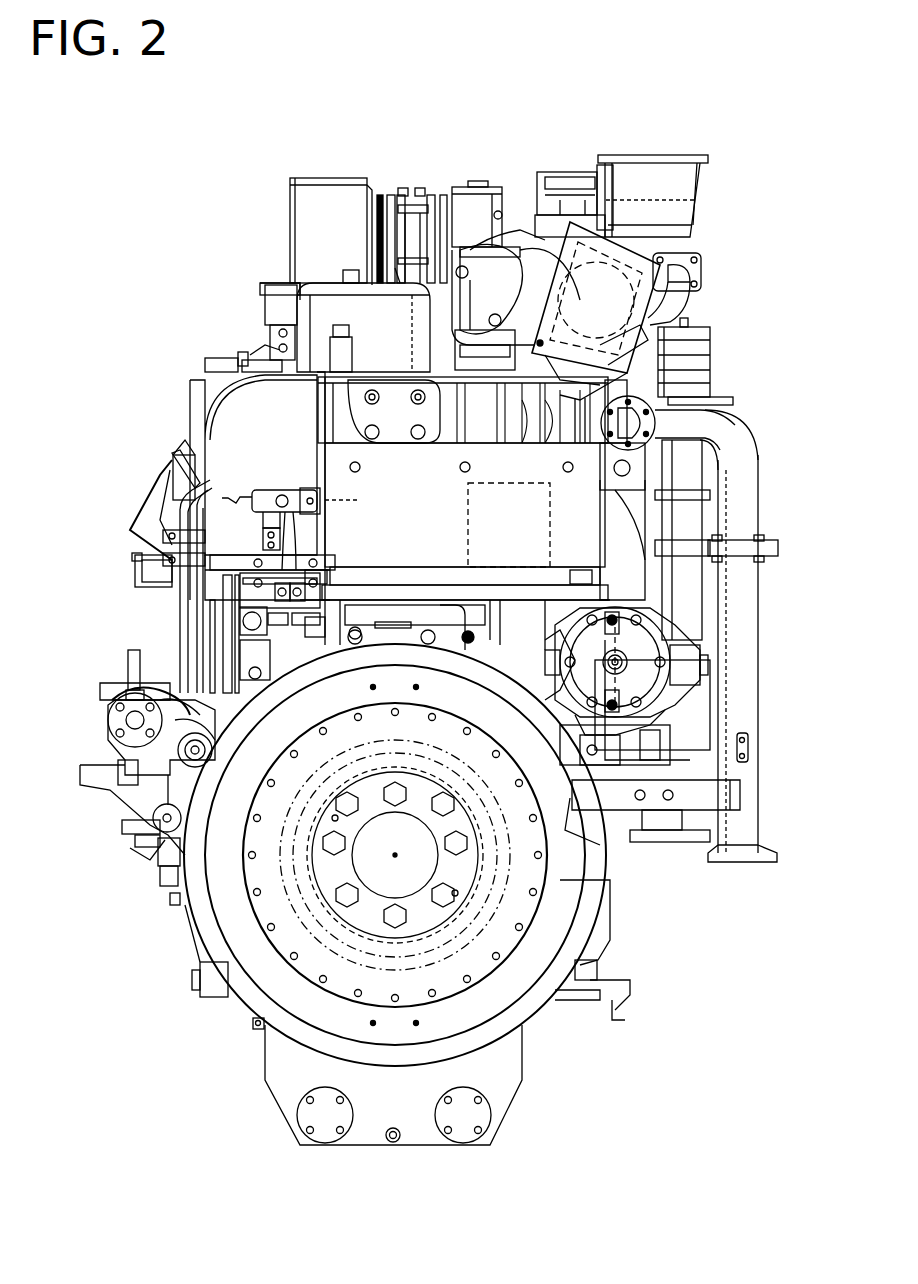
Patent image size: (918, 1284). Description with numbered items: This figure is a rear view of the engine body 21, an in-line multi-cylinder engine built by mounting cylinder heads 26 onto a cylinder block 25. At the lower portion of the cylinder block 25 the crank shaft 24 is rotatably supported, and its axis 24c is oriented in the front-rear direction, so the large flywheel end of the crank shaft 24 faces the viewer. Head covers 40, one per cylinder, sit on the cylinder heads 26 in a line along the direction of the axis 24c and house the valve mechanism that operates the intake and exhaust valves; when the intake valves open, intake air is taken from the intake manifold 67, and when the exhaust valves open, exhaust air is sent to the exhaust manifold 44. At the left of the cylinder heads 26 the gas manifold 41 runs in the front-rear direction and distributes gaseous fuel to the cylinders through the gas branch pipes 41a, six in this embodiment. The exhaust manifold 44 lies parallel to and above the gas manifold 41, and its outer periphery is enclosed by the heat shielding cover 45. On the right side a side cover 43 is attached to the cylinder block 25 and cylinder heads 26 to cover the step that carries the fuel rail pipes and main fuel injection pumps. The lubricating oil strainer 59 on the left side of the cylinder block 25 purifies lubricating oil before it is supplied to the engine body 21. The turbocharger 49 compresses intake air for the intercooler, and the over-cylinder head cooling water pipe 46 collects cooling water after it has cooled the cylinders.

The engine body 21 is at (407, 162).
The turbocharger 49 is at (331, 182).
The over-cylinder head cooling water pipe 46 is at (485, 230).
The head cover 40 is at (335, 285).
The heat shielding cover 45 is at (642, 242).
The cylinder head 26 is at (373, 363).
The exhaust manifold 44 is at (658, 310).
The side cover 43 is at (222, 412).
The gas branch pipe 41a is at (688, 382).
The gas manifold 41 is at (690, 423).
The intake manifold 67 is at (720, 500).
The lubricating oil strainer 59 is at (640, 665).
The cylinder block 25 is at (203, 1006).
The crank shaft 24 is at (385, 870).
The axis 24c is at (398, 852).